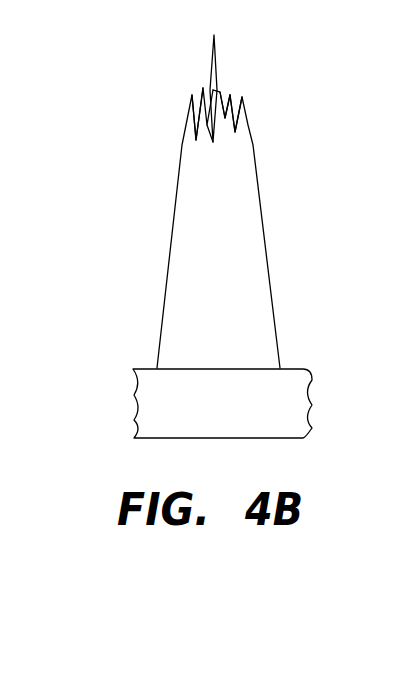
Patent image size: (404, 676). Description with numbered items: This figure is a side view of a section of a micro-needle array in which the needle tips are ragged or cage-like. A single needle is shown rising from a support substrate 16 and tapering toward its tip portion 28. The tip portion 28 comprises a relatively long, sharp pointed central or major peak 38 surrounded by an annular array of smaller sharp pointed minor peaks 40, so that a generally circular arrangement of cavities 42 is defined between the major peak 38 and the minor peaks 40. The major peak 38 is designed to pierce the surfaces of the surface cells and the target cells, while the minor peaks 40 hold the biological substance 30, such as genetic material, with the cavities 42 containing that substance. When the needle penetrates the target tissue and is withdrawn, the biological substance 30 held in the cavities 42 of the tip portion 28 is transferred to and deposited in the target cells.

The support substrate 16 is at (292, 368).
The tip portion 28 is at (217, 166).
The biological substance 30 is at (229, 84).
The major peak 38 is at (217, 44).
The minor peaks 40 is at (200, 93).
The cavities 42 is at (212, 123).